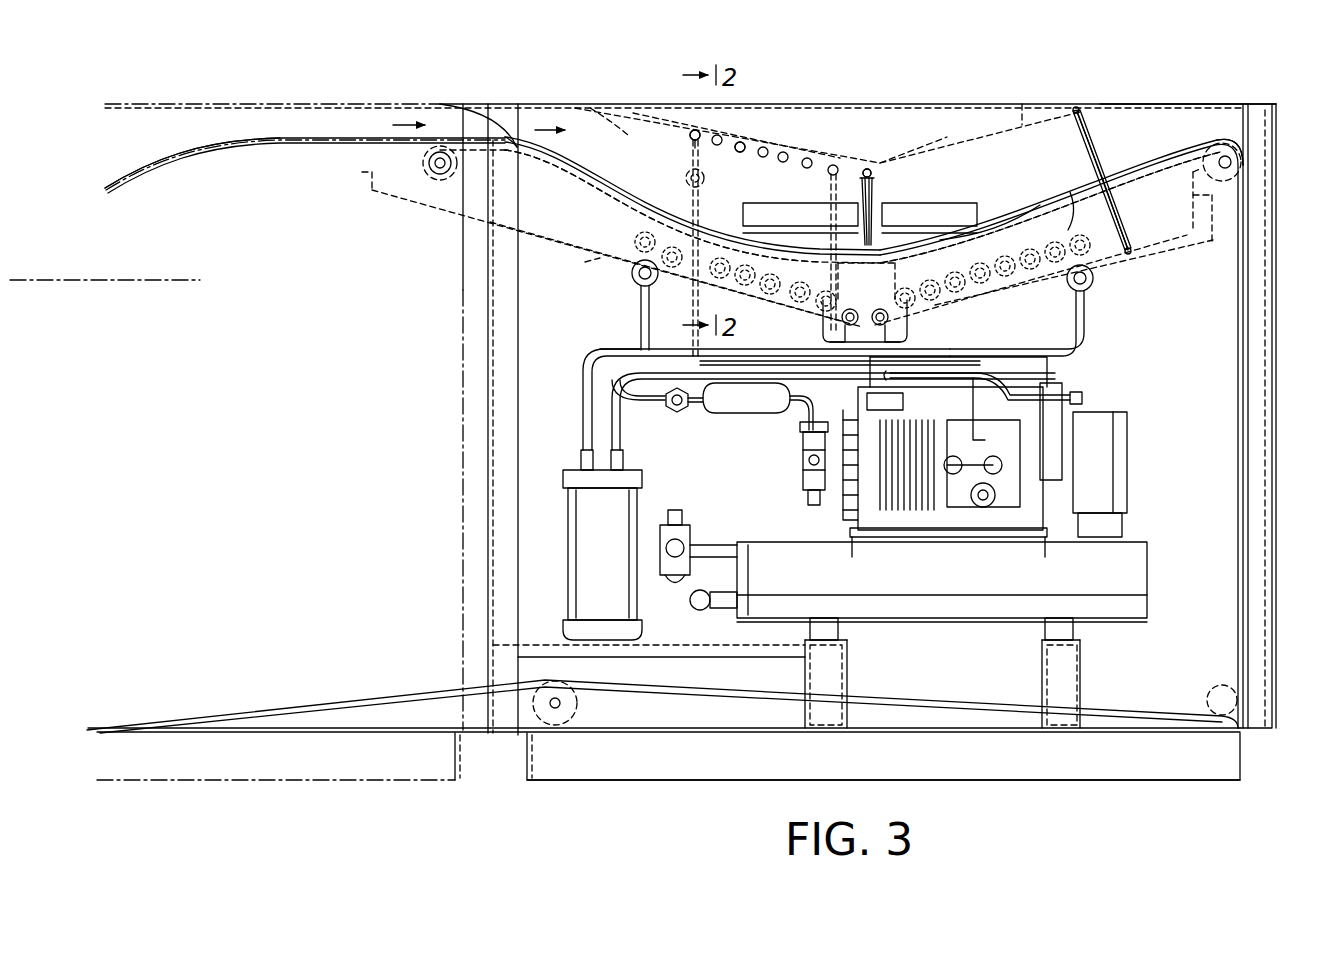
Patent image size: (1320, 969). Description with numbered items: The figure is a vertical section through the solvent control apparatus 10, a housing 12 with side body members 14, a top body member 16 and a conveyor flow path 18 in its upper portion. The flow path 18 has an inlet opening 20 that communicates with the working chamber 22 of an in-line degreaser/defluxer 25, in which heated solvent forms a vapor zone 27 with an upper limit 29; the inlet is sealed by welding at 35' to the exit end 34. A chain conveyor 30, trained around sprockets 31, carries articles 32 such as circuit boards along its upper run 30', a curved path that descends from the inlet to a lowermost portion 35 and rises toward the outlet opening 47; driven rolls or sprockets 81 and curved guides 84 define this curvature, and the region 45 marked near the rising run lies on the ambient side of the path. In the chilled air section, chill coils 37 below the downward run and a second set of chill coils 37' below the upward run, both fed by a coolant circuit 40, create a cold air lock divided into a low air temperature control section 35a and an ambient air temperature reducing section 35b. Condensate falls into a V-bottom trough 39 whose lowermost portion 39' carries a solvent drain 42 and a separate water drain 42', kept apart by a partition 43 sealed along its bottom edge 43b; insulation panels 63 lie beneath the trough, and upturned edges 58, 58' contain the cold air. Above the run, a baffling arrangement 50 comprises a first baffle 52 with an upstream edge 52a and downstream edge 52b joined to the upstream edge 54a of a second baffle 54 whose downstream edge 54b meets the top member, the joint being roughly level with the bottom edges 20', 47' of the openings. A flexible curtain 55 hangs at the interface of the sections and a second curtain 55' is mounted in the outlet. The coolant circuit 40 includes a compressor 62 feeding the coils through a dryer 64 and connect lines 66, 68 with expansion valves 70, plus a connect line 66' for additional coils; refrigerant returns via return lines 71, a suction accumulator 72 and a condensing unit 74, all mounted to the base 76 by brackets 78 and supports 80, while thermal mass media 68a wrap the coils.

The solvent control apparatus 10 is at (570, 805).
The housing 12 is at (1150, 78).
The side body members 14 is at (1218, 560).
The top body member 16 is at (940, 103).
The conveyor flow path 18 is at (676, 135).
The inlet opening 20 is at (478, 394).
The bottom edge of inlet opening 20' is at (532, 164).
The working chamber 22 is at (58, 412).
The degreaser/defluxer 25 is at (181, 96).
The vapor zone 27 is at (130, 348).
The upper limit 29 is at (80, 280).
The chain conveyor 30 is at (164, 152).
The conveyor upper run 30' is at (374, 151).
The sprockets 31 is at (423, 166).
The articles 32 is at (770, 203).
The exit end 34 is at (393, 125).
The lowermost portion 35 is at (862, 164).
The welded connection 35' is at (459, 111).
The low air temperature control section 35a is at (828, 185).
The ambient air temperature reducing section 35b is at (945, 178).
The chill coils 37 is at (723, 254).
The second set of chill coils 37' is at (992, 268).
The V-bottom trough 39 is at (792, 258).
The lowermost portion of trough 39' is at (896, 338).
The coolant circuit 40 is at (570, 352).
The drain 42 is at (849, 290).
The water condensate drain 42' is at (887, 293).
The partition 43 is at (893, 263).
The bottom edge of partition 43b is at (858, 315).
The supply air path 45 is at (960, 197).
The outlet opening 47 is at (1061, 397).
The bottom edge of outlet opening 47' is at (1252, 109).
The baffling arrangement 50 is at (772, 128).
The first baffle 52 is at (750, 128).
The upstream transverse edge 52a is at (632, 108).
The downstream transversely extending edge 52b is at (872, 168).
The second baffle 54 is at (1022, 104).
The upstream edge of second baffle 54a is at (878, 168).
The downstream transversely extending edge 54b is at (1080, 106).
The flexible curtain 55 is at (891, 207).
The second flexible curtain 55' is at (1115, 146).
The upturned edge 58 is at (342, 187).
The upturned edge 58' is at (1254, 205).
The compressor 62 is at (950, 470).
The insulation panels 63 is at (585, 262).
The dryer 64 is at (740, 410).
The refrigerant connect line 66 is at (664, 318).
The refrigerant connect line 66' is at (680, 250).
The refrigerant connect line 68 is at (1085, 330).
The thermal mass media 68a is at (722, 260).
The expansion valves 70 is at (632, 285).
The return lines 71 is at (587, 405).
The suction accumulator 72 is at (580, 548).
The refrigerant condensing unit 74 is at (970, 605).
The base 76 is at (668, 782).
The brackets 78 is at (845, 632).
The supports 80 is at (838, 676).
The driven rolls or sprockets 81 is at (1262, 157).
The curved guides 84 is at (1069, 223).